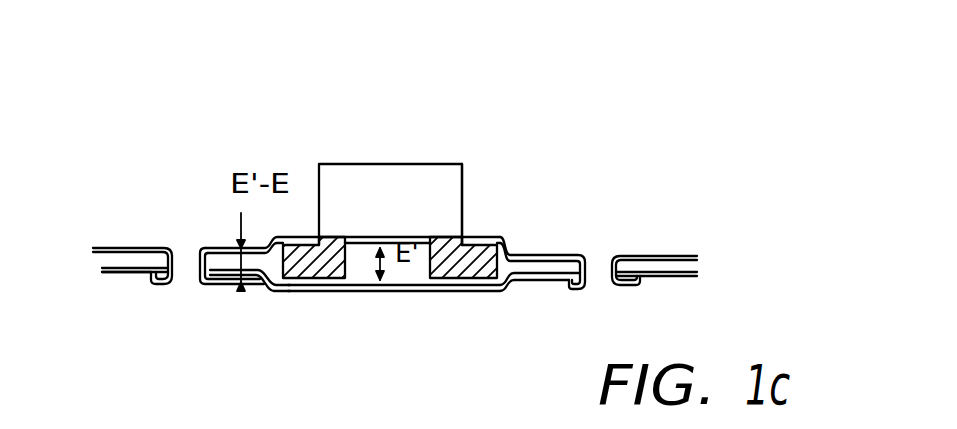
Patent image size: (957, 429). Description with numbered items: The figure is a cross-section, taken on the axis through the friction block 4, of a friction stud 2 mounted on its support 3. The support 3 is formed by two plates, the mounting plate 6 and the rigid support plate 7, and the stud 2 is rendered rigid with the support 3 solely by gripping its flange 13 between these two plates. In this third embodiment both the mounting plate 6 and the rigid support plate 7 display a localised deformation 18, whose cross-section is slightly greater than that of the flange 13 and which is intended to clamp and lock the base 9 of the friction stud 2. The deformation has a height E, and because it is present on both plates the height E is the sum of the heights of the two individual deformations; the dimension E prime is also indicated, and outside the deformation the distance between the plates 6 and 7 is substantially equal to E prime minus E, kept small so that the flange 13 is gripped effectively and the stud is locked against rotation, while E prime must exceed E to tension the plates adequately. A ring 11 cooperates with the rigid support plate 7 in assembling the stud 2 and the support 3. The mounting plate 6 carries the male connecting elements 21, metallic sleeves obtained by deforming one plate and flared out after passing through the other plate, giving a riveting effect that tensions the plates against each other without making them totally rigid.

The friction stud 2 is at (475, 195).
The support 3 is at (225, 298).
The friction block 4 is at (417, 163).
The mounting plate 6 is at (213, 248).
The rigid support plate 7 is at (240, 291).
The base of the friction stud 9 is at (434, 276).
The ring 11 is at (487, 237).
The flange 13 is at (301, 286).
The localised deformation 18 is at (463, 293).
The metallic sleeve 21 is at (181, 253).